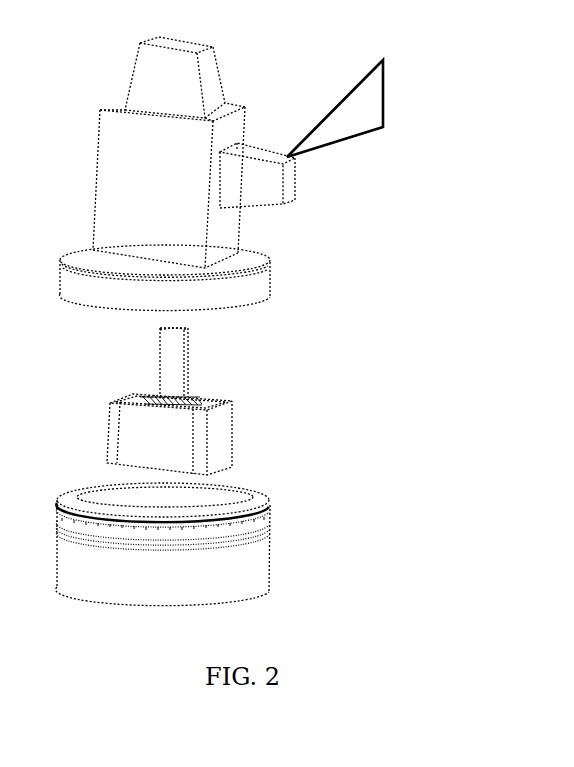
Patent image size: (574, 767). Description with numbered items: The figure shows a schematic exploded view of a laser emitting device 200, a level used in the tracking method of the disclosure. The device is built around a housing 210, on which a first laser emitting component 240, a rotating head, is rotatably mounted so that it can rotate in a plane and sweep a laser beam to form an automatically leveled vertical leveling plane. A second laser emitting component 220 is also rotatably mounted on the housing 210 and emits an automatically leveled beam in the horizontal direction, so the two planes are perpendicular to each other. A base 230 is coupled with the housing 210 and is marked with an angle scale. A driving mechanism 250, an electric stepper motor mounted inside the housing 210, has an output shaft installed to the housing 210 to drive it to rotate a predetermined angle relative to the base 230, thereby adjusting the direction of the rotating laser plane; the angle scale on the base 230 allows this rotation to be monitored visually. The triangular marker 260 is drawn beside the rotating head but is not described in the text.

The laser emitting device 200 is at (336, 34).
The housing 210 is at (222, 143).
The second laser emitting component 220 is at (155, 49).
The base 230 is at (235, 552).
The first laser emitting component 240 is at (262, 195).
The driving mechanism 250 is at (195, 418).
The triangular marker 260 is at (338, 122).